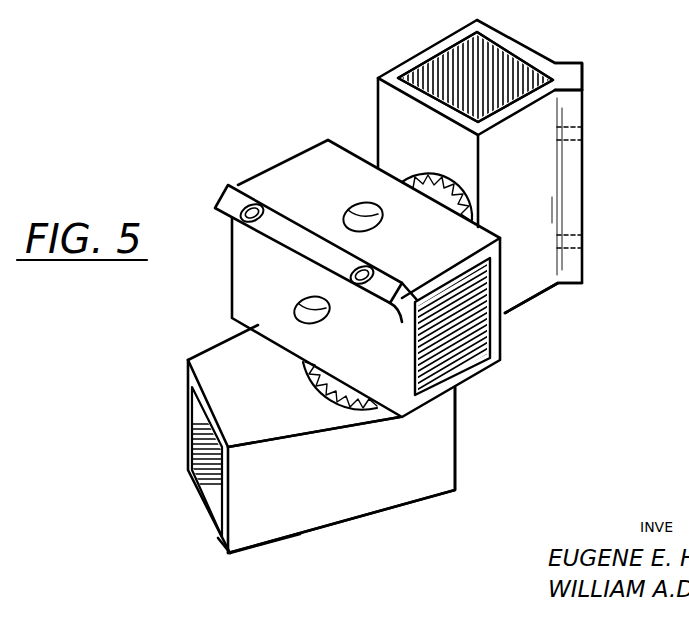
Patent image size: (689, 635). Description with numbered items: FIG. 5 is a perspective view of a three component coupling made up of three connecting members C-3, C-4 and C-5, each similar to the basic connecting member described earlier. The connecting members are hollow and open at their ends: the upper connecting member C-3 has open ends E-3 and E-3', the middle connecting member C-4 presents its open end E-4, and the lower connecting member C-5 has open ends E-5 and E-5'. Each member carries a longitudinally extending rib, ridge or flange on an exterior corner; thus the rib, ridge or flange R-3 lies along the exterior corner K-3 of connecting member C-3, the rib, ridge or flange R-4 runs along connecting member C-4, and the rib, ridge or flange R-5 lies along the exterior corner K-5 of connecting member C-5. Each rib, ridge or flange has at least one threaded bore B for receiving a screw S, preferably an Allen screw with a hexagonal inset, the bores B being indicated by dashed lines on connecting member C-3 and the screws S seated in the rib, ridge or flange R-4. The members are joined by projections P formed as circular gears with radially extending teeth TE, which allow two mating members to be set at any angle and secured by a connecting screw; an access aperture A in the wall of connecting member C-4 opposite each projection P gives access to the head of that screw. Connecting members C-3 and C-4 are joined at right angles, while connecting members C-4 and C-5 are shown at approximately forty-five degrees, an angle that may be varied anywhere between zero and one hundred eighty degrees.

The connecting member C-3 is at (422, 58).
The open end E-3 is at (481, 64).
The exterior corner K-3 is at (582, 63).
The rib, ridge or flange R-3 is at (575, 95).
The threaded bore B is at (583, 130).
The projection P is at (412, 178).
The teeth TE is at (445, 183).
The connecting member C-4 is at (283, 163).
The access aperture A is at (362, 202).
The screw S is at (263, 210).
The rib, ridge or flange R-4 is at (218, 202).
The connecting member C-5 is at (217, 360).
The open end E-3' is at (549, 308).
The open end E-4 is at (483, 362).
The open end E-5' is at (378, 470).
The open end E-5 is at (175, 462).
The exterior corner K-5 is at (217, 540).
The rib, ridge or flange R-5 is at (227, 555).